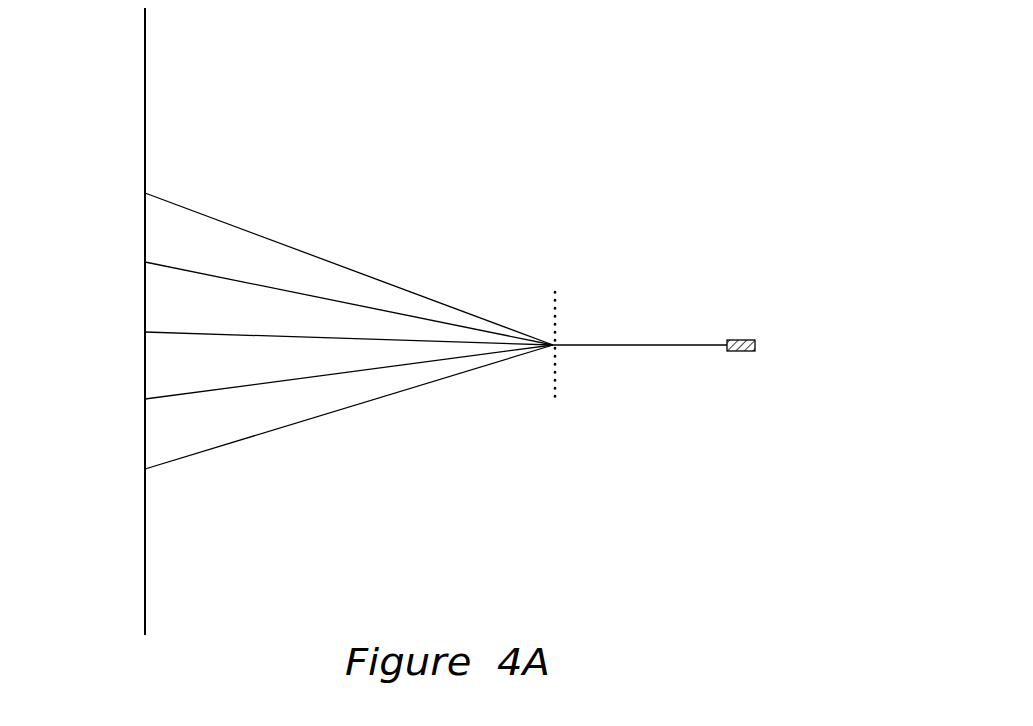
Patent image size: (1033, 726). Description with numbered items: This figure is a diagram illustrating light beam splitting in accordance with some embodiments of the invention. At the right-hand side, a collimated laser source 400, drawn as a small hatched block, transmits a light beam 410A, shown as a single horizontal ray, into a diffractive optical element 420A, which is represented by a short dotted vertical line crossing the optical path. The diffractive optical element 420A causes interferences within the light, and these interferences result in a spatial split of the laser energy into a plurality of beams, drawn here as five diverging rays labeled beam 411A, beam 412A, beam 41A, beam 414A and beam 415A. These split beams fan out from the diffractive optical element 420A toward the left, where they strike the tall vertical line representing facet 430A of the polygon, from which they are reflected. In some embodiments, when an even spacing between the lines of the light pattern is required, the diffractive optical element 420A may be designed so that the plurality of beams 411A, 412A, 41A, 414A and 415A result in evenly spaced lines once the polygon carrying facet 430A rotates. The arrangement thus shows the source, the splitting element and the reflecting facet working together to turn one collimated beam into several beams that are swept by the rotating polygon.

The facet 430A is at (143, 70).
The beam 411A is at (199, 186).
The beam 412A is at (185, 249).
The beam 41A is at (192, 304).
The beam 414A is at (168, 397).
The beam 415A is at (165, 462).
The diffractive optical element (DOE) 420A is at (558, 310).
The light beam 410A is at (657, 343).
The collimated laser source 400 is at (758, 345).